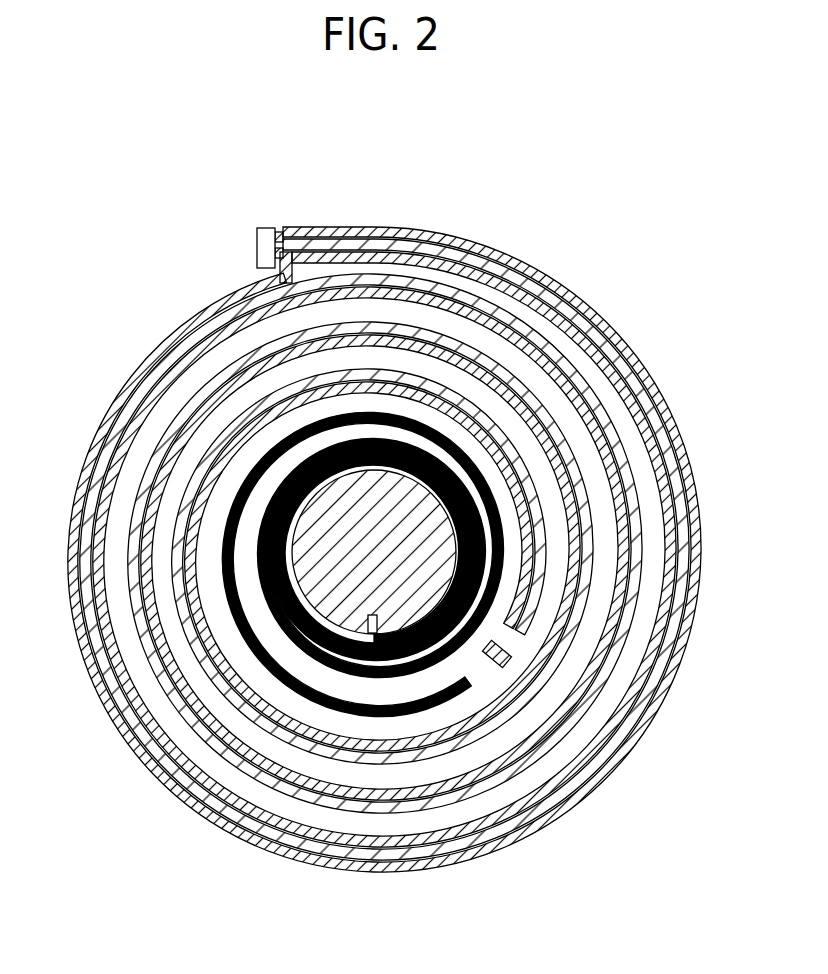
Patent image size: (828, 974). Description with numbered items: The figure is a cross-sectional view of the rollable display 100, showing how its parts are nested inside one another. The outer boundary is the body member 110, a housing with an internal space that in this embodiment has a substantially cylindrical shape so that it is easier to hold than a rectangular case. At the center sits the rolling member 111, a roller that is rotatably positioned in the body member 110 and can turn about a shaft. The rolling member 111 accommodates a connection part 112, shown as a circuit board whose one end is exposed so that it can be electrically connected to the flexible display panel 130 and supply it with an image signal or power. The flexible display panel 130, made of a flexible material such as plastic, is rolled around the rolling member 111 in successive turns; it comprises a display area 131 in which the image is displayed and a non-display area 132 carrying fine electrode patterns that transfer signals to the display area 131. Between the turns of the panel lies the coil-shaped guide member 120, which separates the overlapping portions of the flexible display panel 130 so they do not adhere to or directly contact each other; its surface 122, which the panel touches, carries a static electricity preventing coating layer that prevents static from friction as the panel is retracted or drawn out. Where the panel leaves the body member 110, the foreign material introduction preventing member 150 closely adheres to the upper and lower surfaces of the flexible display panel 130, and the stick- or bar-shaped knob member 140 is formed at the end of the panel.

The rollable display 100 is at (171, 153).
The body member 110 is at (650, 392).
The rolling member 111 is at (299, 643).
The connection part 112 is at (417, 653).
The guide member 120 is at (585, 690).
The surface 122 is at (112, 408).
The flexible display panel 130 is at (578, 302).
The display area 131 is at (507, 655).
The non-display area 132 is at (487, 662).
The knob member 140 is at (262, 228).
The foreign material introduction preventing member 150 is at (297, 232).